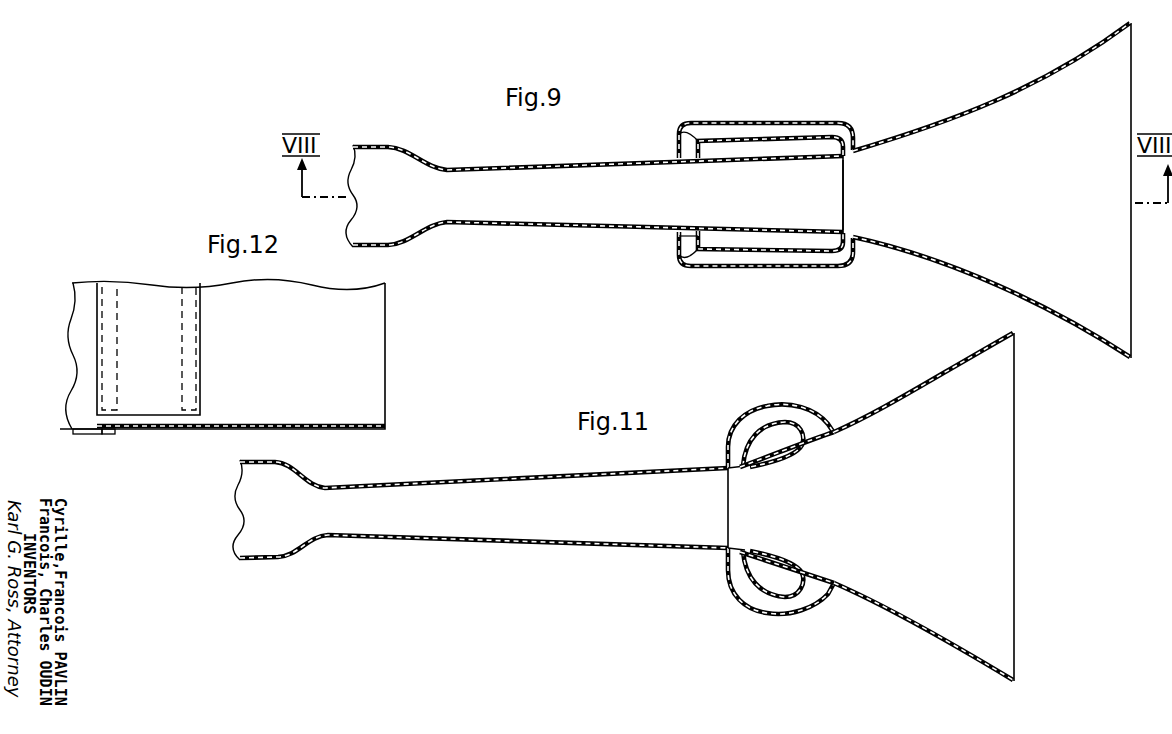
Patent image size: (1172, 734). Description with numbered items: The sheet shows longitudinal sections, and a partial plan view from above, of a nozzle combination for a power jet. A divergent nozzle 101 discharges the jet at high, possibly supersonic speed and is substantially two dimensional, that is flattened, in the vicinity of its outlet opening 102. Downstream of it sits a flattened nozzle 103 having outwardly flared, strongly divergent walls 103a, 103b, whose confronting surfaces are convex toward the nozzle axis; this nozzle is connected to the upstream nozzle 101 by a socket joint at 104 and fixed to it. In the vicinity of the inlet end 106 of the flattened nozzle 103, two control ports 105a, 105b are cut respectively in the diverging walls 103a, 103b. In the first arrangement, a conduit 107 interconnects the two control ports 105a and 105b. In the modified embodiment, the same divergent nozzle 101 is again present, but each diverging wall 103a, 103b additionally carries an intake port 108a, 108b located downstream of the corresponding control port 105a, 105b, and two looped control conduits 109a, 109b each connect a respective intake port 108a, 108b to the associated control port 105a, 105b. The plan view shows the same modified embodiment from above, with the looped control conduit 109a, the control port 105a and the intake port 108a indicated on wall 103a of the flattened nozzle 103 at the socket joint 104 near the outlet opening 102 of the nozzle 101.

In FIG. 9, the divergent nozzle 101 is at (548, 203).
In FIG. 11, the divergent nozzle 101 is at (473, 480).
In FIG. 12, the divergent nozzle 101 is at (83, 374).
In FIG. 9, the outlet opening 102 is at (838, 243).
In FIG. 11, the outlet opening 102 is at (672, 532).
In FIG. 12, the outlet opening 102 is at (72, 418).
In FIG. 9, the flattened nozzle 103 is at (1012, 190).
In FIG. 11, the flattened nozzle 103 is at (900, 507).
In FIG. 12, the flattened nozzle 103 is at (353, 404).
In FIG. 9, the diverging wall 103a is at (985, 108).
In FIG. 11, the diverging wall 103a is at (887, 408).
In FIG. 9, the diverging wall 103b is at (952, 264).
In FIG. 11, the diverging wall 103b is at (907, 614).
In FIG. 12, the socket joint 104 is at (103, 438).
In FIG. 9, the control port 105a is at (854, 146).
In FIG. 11, the control port 105a is at (742, 470).
In FIG. 12, the control port 105a is at (112, 402).
In FIG. 9, the control port 105b is at (853, 233).
In FIG. 11, the control port 105b is at (743, 547).
In FIG. 9, the inlet end 106 is at (848, 205).
In FIG. 9, the conduit 107 is at (680, 236).
In FIG. 11, the intake port 108a is at (817, 449).
In FIG. 12, the intake port 108a is at (188, 380).
In FIG. 11, the intake port 108b is at (820, 573).
In FIG. 11, the looped control conduit 109a is at (777, 405).
In FIG. 12, the looped control conduit 109a is at (135, 304).
In FIG. 11, the looped control conduit 109b is at (765, 613).